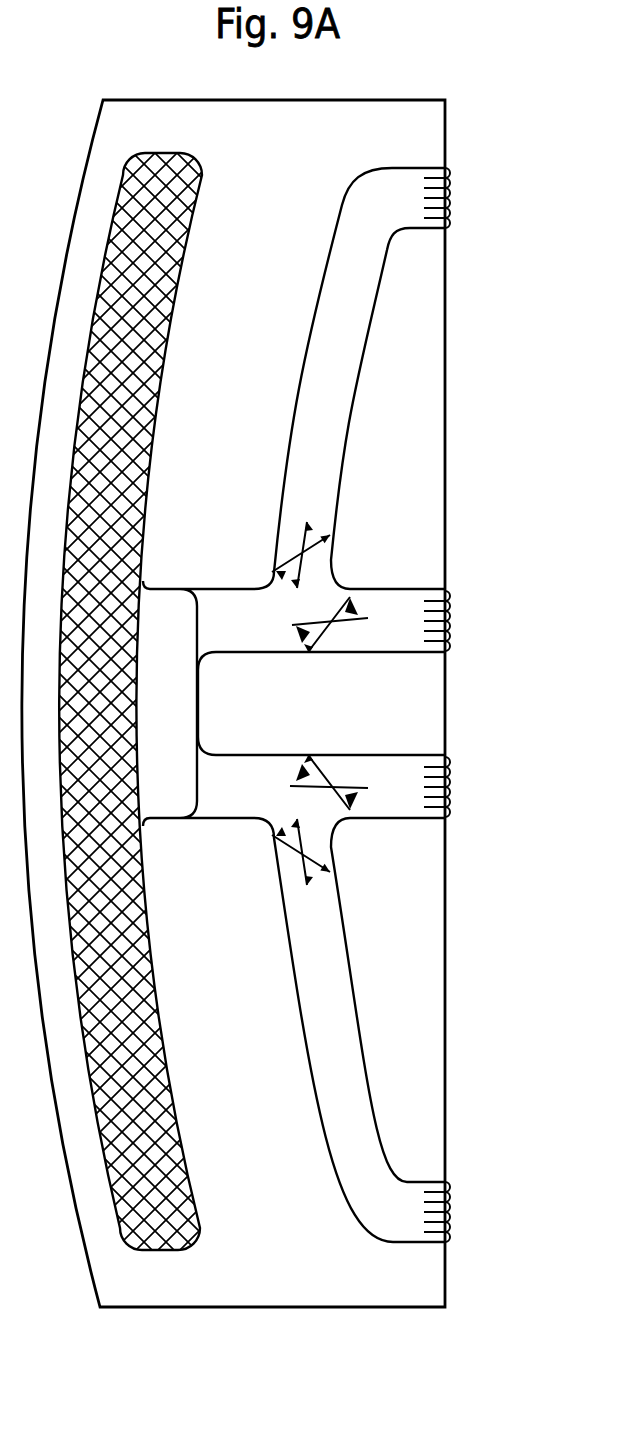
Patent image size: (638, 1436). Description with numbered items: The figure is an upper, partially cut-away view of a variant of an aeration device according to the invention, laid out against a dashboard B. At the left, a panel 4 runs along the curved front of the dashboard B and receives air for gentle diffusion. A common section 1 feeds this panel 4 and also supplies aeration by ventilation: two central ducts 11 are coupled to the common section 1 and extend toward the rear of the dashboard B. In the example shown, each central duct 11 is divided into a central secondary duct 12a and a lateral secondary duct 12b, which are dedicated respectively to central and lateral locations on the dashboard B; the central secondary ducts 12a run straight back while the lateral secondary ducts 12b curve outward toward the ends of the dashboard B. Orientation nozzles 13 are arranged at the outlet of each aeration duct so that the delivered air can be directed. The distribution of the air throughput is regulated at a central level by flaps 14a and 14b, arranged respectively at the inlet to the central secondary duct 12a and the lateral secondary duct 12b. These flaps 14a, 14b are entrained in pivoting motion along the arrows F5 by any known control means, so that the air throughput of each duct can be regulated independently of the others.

The dashboard B is at (262, 1300).
The panel 4 is at (157, 373).
The common section 1 is at (163, 805).
The central duct 11 is at (218, 640).
The central secondary duct 12a is at (398, 642).
The lateral secondary duct 12b is at (340, 453).
The orientation nozzle 13 is at (451, 197).
The flap 14a is at (350, 600).
The flap 14b is at (330, 558).
The arrows F5 is at (300, 631).